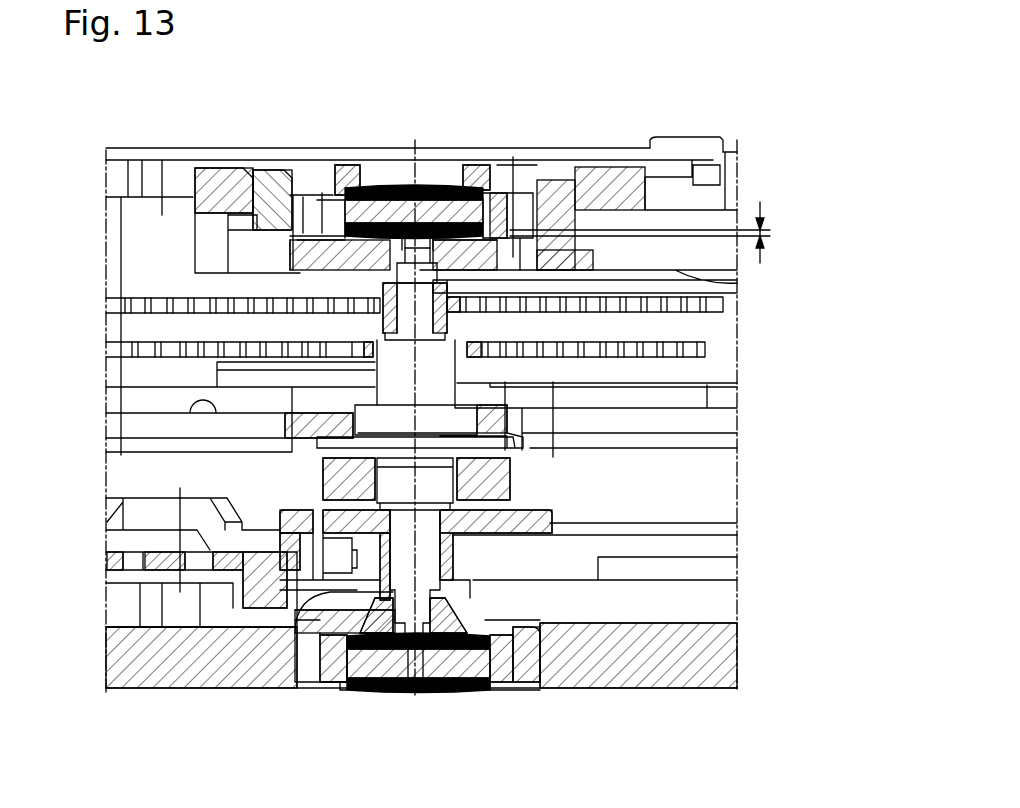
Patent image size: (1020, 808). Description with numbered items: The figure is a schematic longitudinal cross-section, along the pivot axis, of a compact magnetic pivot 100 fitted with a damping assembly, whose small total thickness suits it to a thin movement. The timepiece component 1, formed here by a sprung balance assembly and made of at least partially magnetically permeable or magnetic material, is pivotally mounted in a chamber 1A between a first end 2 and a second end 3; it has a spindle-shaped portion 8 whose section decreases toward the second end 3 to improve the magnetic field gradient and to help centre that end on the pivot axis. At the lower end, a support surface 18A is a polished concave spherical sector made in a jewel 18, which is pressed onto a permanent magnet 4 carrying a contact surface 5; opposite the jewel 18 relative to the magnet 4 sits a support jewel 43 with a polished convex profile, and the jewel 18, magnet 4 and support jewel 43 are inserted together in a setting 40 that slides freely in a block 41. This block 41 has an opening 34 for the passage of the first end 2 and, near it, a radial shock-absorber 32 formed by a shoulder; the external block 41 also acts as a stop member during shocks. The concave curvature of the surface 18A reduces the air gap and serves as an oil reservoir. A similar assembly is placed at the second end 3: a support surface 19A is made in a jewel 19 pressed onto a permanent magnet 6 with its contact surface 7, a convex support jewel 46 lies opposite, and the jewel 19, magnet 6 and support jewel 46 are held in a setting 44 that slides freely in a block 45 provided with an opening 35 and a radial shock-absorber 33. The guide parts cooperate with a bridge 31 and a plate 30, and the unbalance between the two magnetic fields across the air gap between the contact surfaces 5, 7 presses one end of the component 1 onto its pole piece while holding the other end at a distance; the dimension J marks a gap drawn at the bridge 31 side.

The magnetic pivot 100 is at (833, 274).
The bridge 31 is at (745, 176).
The plate 30 is at (735, 652).
The gap dimension J is at (645, 232).
The block 45 is at (282, 157).
The setting 44 is at (307, 205).
The permanent magnet 6 is at (330, 203).
The support jewel 46 is at (403, 186).
The second end 3 is at (421, 220).
The jewel 19 is at (457, 200).
The support surface 19A is at (438, 244).
The opening 35 is at (380, 236).
The radial shock-absorber 33 is at (390, 252).
The contact surface 7 is at (380, 283).
The spindle-shaped portion 8 is at (440, 370).
The timepiece component 1 is at (453, 420).
The contact surface 5 is at (460, 592).
The support surface 18A is at (443, 636).
The chamber 1A is at (207, 530).
The opening 34 is at (394, 605).
The radial shock-absorber 32 is at (333, 625).
The block 41 is at (325, 680).
The setting 40 is at (338, 688).
The first end 2 is at (413, 650).
The support jewel 43 is at (468, 690).
The permanent magnet 4 is at (490, 689).
The jewel 18 is at (485, 688).